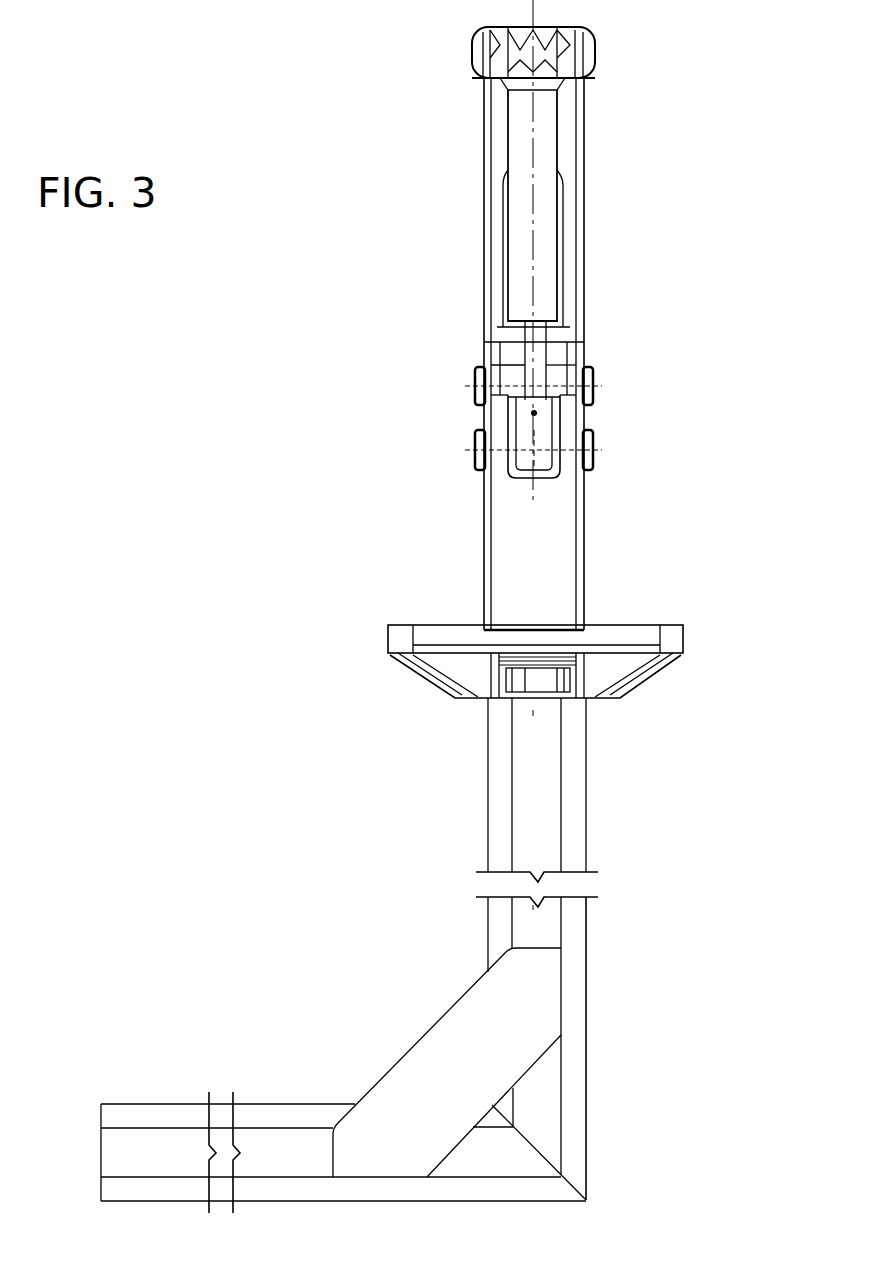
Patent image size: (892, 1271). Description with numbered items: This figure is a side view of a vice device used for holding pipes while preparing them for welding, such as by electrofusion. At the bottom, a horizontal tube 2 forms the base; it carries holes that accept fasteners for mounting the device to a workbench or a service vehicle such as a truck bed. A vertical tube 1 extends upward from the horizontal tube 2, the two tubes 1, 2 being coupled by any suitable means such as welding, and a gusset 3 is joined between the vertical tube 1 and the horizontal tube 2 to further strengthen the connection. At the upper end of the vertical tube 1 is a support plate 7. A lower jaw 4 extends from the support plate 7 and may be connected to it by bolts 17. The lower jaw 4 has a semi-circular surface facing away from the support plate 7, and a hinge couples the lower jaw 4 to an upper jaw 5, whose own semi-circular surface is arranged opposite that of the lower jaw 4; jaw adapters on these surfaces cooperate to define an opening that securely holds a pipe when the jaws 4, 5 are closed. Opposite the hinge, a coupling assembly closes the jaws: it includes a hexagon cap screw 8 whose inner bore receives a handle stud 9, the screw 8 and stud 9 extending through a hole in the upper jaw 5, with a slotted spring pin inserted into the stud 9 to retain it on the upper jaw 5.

The vertical tube 1 is at (587, 1138).
The horizontal tube 2 is at (162, 1104).
The gusset 3 is at (402, 1055).
The lower jaw 4 is at (488, 549).
The upper jaw 5 is at (583, 112).
The support plate 7 is at (387, 636).
The hexagon cap screw 8 is at (509, 147).
The handle stud 9 is at (526, 357).
The bolts 17 is at (503, 698).